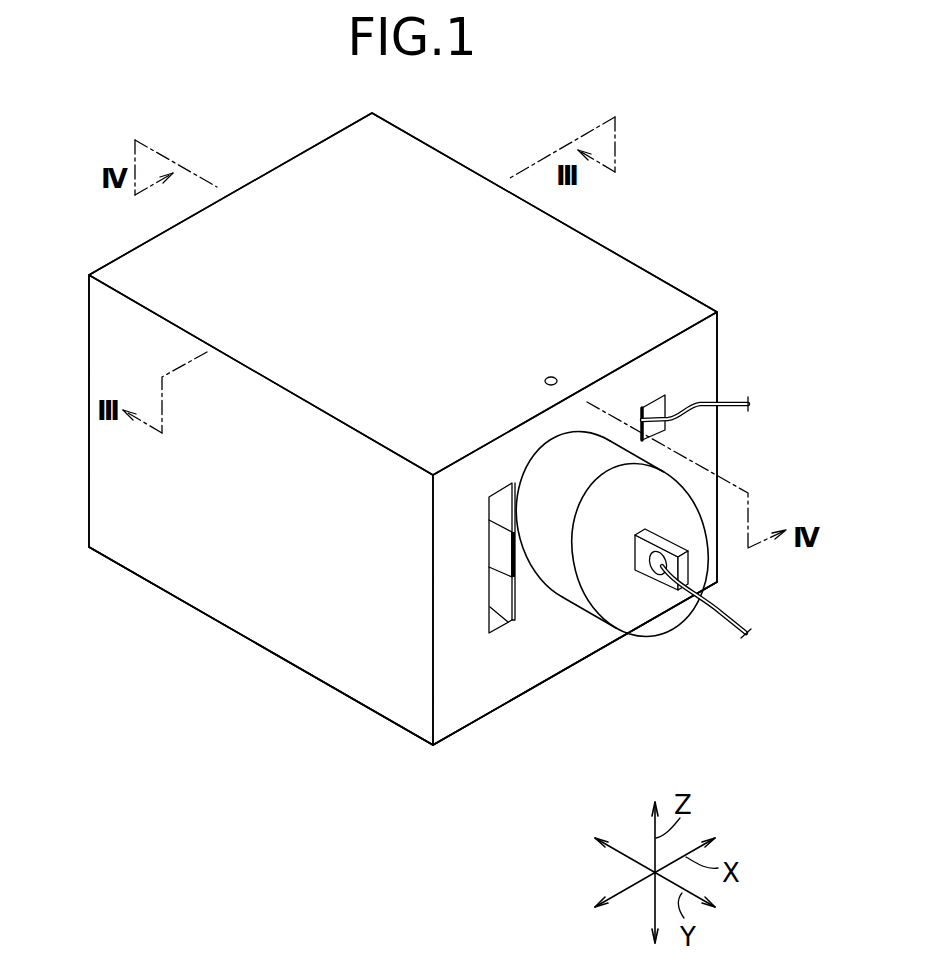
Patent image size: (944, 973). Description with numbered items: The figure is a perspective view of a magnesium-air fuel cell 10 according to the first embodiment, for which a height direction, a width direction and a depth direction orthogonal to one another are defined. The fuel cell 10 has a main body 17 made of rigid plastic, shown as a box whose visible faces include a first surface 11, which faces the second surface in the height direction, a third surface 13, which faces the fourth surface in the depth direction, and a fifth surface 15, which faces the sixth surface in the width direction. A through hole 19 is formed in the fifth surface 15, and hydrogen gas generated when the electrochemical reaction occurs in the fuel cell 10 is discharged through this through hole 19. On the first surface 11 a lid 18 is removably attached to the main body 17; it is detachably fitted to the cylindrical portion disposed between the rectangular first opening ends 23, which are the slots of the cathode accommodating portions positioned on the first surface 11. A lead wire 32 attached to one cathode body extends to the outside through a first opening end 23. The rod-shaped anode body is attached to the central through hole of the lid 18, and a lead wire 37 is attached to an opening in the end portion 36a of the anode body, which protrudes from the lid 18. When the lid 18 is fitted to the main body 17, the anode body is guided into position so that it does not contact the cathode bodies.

The magnesium-air fuel cell 10 is at (674, 161).
The first surface 11 is at (513, 677).
The third surface 13 is at (236, 593).
The fifth surface 15 is at (337, 178).
The main body 17 is at (676, 273).
The lid 18 is at (617, 600).
The through hole 19 is at (551, 376).
The first opening end 23 is at (656, 427).
The lead wire 32 is at (736, 404).
The end portion 36a is at (668, 532).
The lead wire 37 is at (727, 613).